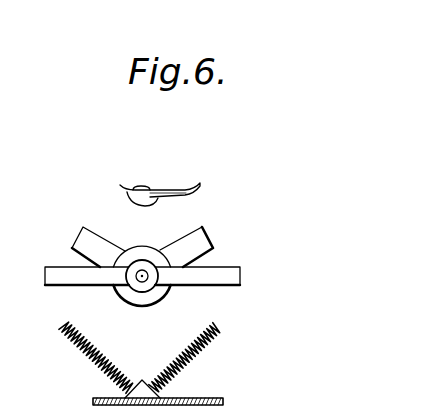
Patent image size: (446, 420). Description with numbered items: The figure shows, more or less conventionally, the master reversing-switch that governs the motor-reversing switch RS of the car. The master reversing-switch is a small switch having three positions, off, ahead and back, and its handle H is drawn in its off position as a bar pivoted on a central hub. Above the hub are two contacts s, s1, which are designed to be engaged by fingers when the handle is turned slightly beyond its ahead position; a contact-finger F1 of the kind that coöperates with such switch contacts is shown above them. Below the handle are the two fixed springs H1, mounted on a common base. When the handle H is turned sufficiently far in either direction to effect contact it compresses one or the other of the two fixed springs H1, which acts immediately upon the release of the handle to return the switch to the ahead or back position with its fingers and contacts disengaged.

The motor-reversing switch RS is at (239, 154).
The contact-finger F1 is at (144, 183).
The handle H is at (240, 276).
The contact s is at (77, 238).
The contact s1 is at (207, 237).
The fixed springs H1 is at (165, 363).